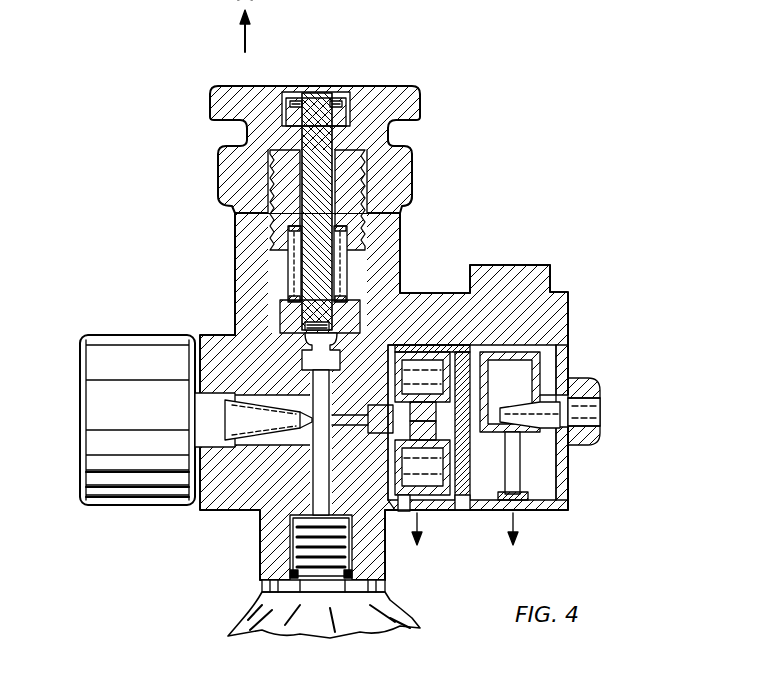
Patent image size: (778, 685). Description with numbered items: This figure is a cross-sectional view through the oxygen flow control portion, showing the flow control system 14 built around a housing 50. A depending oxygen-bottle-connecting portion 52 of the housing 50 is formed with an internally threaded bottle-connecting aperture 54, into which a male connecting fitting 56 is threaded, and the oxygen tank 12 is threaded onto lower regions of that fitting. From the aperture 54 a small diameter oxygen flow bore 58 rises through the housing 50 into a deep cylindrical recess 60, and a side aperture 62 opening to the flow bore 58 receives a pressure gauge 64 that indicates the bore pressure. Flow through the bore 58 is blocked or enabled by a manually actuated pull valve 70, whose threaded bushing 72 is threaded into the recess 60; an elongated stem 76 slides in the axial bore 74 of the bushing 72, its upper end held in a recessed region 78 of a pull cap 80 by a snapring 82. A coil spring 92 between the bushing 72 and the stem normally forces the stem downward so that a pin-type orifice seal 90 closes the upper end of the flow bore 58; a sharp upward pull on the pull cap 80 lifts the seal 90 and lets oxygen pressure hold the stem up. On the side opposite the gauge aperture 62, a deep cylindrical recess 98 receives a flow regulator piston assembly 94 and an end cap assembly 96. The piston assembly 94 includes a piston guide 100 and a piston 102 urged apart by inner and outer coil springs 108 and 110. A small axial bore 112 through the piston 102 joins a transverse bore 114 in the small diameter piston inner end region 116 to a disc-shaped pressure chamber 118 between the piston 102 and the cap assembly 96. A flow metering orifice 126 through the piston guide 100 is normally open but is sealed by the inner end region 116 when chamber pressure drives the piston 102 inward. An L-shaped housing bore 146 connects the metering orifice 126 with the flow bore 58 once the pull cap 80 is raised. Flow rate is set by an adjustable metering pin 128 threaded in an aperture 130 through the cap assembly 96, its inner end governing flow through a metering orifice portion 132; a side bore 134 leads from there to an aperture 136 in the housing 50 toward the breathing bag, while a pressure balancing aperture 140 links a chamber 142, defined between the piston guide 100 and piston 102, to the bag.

The oxygen tank 12 is at (262, 624).
The flow control system 14 is at (612, 289).
The housing 50 is at (556, 284).
The oxygen-bottle-connecting portion 52 is at (262, 527).
The bottle-connecting aperture 54 is at (300, 545).
The connecting fitting 56 is at (262, 587).
The oxygen flow bore 58 is at (313, 457).
The cylindrical recess 60 is at (362, 242).
The gauge aperture 62 is at (300, 415).
The pressure gauge 64 is at (112, 447).
The pull valve 70 is at (490, 145).
The threaded bushing 72 is at (356, 202).
The axial bore 74 is at (396, 130).
The stem 76 is at (272, 181).
The recessed region 78 is at (343, 103).
The pull cap 80 is at (212, 98).
The snapring 82 is at (298, 101).
The orifice seal 90 is at (334, 328).
The coil spring 92 is at (290, 236).
The flow regulator piston assembly 94 is at (530, 287).
The end cap assembly 96 is at (605, 410).
The cylindrical recess 98 is at (552, 297).
The piston guide 100 is at (386, 372).
The piston 102 is at (453, 460).
The inner coil spring 108 is at (392, 515).
The outer coil spring 110 is at (420, 375).
The axial bore 112 is at (468, 452).
The transverse bore 114 is at (412, 426).
The piston inner end region 116 is at (410, 463).
The pressure chamber 118 is at (480, 490).
The flow metering orifice 126 is at (370, 410).
The adjustable metering pin 128 is at (558, 418).
The cap aperture 130 is at (575, 392).
The metering orifice portion 132 is at (494, 428).
The side bore 134 is at (522, 465).
The housing aperture 136 is at (530, 505).
The pressure balancing aperture 140 is at (398, 508).
The chamber 142 is at (503, 292).
The L-shaped housing bore 146 is at (350, 392).